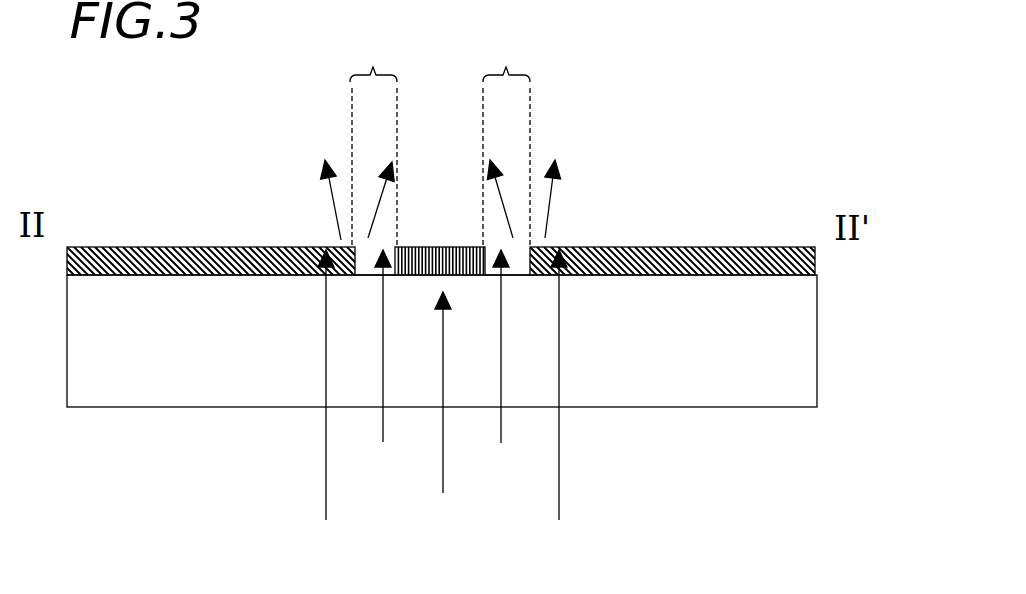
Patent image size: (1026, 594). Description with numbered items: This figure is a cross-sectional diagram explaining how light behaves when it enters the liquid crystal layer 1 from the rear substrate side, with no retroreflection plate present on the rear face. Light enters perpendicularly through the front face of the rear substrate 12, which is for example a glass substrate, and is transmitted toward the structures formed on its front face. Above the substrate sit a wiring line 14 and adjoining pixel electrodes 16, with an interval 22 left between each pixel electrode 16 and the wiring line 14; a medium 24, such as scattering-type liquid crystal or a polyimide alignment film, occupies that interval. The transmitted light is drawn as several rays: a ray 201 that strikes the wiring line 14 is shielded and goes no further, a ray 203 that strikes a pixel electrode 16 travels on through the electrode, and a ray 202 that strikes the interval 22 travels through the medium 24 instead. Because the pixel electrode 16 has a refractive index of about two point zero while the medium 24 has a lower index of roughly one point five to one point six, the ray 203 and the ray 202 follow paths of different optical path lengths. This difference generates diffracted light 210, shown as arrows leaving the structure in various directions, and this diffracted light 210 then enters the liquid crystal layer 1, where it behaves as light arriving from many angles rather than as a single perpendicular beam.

The liquid crystal layer 1 is at (722, 181).
The rear substrate 12 is at (790, 313).
The wiring line 14 is at (435, 247).
The pixel electrode 16 is at (100, 247).
The interval 22 is at (440, 139).
The medium 24 is at (515, 275).
The ray 201 is at (442, 453).
The ray 202 is at (500, 425).
The ray 203 is at (562, 458).
The diffracted light 210 is at (500, 193).